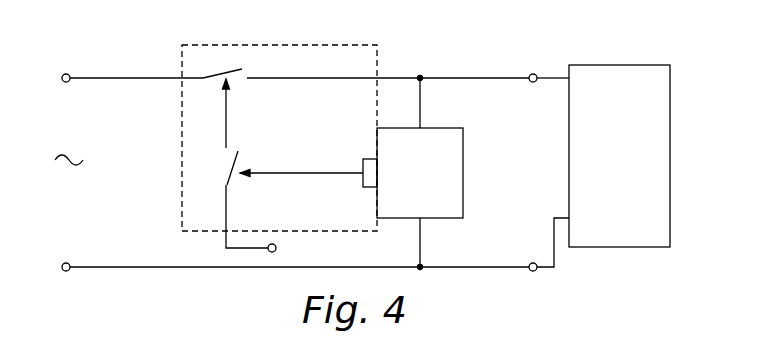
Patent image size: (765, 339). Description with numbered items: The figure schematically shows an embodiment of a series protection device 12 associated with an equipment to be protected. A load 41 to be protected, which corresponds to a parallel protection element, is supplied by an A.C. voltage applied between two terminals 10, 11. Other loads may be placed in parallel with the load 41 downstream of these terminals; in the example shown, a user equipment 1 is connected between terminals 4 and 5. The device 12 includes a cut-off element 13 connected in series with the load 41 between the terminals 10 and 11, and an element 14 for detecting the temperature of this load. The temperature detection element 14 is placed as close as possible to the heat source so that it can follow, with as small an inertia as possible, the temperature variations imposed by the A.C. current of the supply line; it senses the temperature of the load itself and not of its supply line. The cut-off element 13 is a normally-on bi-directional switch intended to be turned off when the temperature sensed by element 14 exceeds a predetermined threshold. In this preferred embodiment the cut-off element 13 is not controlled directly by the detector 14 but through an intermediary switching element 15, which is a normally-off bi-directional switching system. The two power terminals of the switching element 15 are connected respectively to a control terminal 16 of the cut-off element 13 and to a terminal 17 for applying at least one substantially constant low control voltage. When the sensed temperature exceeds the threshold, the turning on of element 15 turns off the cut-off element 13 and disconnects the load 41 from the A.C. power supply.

The user equipment 1 is at (665, 87).
The terminal 4 is at (533, 83).
The terminal 5 is at (532, 258).
The terminal 10 is at (66, 73).
The terminal 11 is at (66, 263).
The series protection device 12 is at (378, 57).
The cut-off element 13 is at (239, 68).
The temperature detection element 14 is at (368, 159).
The intermediary switching element 15 is at (239, 160).
The control terminal 16 is at (226, 115).
The terminal of application of a control voltage 17 is at (277, 248).
The load 41 is at (463, 168).